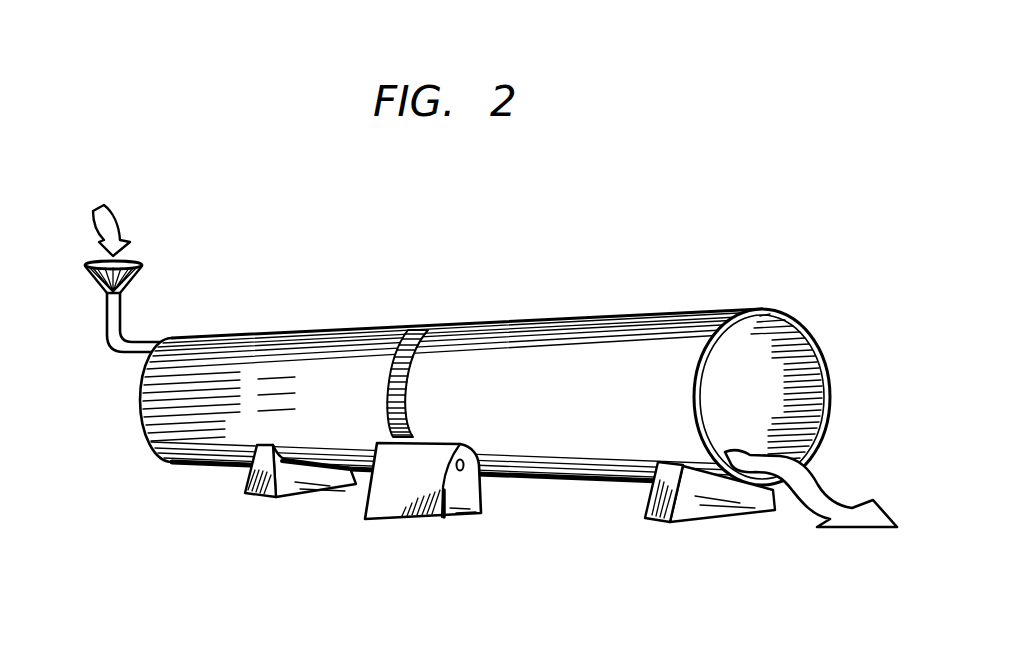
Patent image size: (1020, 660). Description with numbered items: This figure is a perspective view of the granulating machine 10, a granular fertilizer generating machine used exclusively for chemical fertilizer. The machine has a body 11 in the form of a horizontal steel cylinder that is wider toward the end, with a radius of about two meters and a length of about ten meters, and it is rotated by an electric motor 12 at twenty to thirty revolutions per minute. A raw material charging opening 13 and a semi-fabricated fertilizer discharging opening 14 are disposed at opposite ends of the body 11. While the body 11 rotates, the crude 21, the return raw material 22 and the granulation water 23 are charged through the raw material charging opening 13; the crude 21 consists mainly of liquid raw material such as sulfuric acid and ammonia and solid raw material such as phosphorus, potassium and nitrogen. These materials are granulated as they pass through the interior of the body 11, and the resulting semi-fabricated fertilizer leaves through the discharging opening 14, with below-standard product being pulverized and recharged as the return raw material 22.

The granulating machine 10 is at (459, 308).
The body 11 is at (580, 318).
The electric motor 12 is at (420, 522).
The raw material charging opening 13 is at (141, 272).
The semi-fabricated fertilizer discharging opening 14 is at (820, 477).
The crude 21 is at (102, 216).
The return raw material 22 is at (102, 216).
The granulation water 23 is at (102, 216).